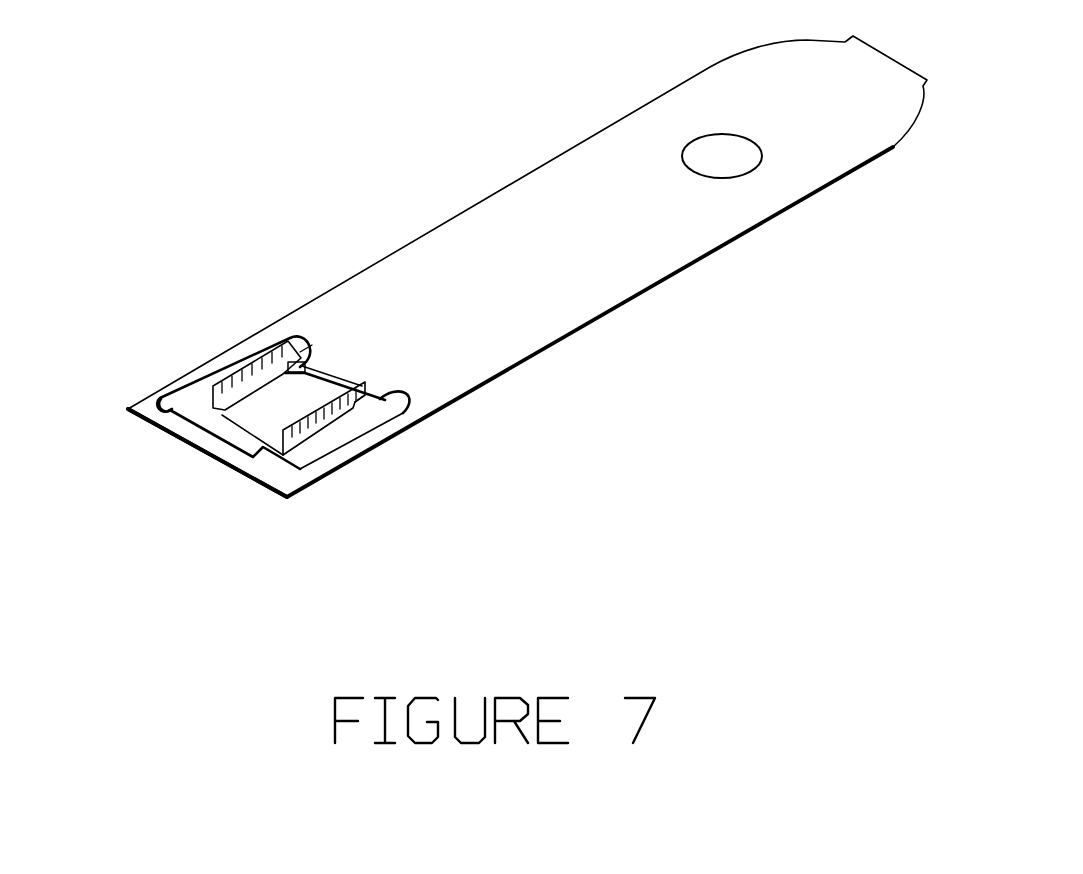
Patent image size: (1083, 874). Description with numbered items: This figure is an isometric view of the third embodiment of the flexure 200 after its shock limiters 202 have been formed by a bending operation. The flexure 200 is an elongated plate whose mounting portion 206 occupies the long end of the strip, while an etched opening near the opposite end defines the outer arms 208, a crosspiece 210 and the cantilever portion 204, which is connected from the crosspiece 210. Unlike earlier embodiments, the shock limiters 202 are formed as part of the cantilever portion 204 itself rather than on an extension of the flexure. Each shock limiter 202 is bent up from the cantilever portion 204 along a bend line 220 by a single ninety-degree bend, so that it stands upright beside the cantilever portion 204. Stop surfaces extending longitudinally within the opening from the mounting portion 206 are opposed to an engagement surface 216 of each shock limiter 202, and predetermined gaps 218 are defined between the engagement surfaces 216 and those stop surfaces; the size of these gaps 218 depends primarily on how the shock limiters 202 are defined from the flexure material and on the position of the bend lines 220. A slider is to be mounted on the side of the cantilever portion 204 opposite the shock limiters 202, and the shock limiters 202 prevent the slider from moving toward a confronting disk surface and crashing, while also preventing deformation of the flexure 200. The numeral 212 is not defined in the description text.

The flexure 200 is at (494, 323).
The shock limiters 202 is at (262, 367).
The cantilever portion 204 is at (250, 432).
The mounting portion 206 is at (567, 170).
The outer arms 208 is at (178, 383).
The crosspiece 210 is at (178, 420).
The slot rounded end 212 is at (160, 405).
The engagement surface 216 is at (305, 337).
The predetermined gaps 218 is at (324, 336).
The bend lines 220 is at (245, 425).